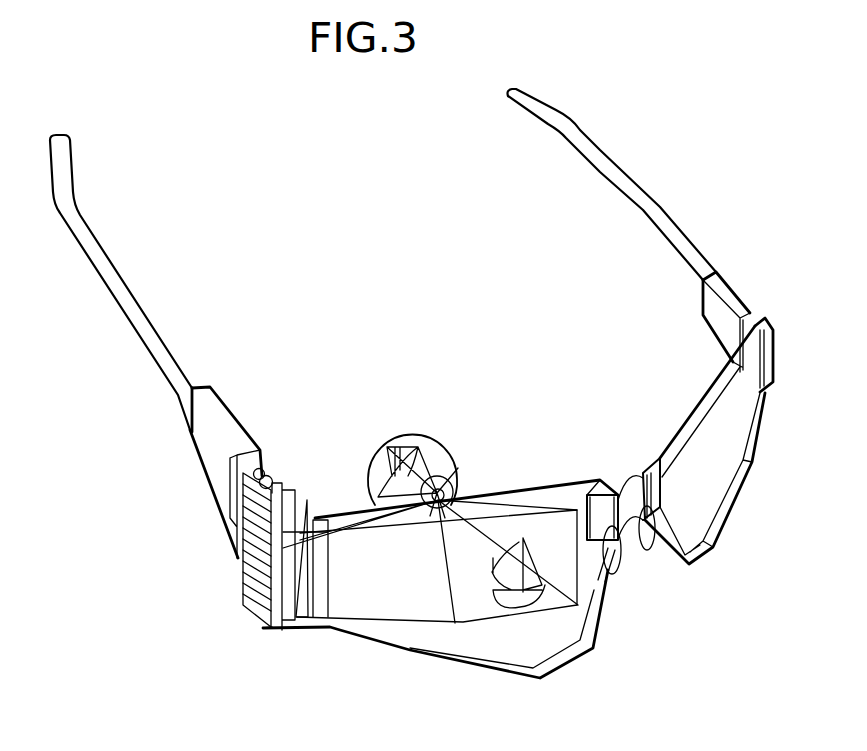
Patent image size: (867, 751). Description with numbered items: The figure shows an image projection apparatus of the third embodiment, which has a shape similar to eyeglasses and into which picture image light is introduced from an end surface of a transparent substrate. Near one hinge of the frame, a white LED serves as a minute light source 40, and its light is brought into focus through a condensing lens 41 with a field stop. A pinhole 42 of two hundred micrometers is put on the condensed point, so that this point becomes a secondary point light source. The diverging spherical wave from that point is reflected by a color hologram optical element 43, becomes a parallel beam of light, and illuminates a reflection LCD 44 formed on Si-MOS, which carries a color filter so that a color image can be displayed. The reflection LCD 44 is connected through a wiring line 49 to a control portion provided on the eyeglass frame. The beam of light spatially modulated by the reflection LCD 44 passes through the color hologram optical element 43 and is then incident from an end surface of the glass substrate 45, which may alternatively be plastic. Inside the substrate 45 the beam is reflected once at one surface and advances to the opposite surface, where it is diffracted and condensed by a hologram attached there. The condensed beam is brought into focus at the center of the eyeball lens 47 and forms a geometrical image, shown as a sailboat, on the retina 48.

The minute light source 40 is at (263, 468).
The condensing lens 41 is at (273, 478).
The pinhole 42 is at (284, 497).
The color hologram optical element 43 is at (298, 623).
The reflection LCD 44 is at (272, 632).
The glass substrate 45 is at (455, 623).
The eyeball lens 47 is at (450, 480).
The retina 48 is at (402, 434).
The wiring line 49 is at (245, 570).